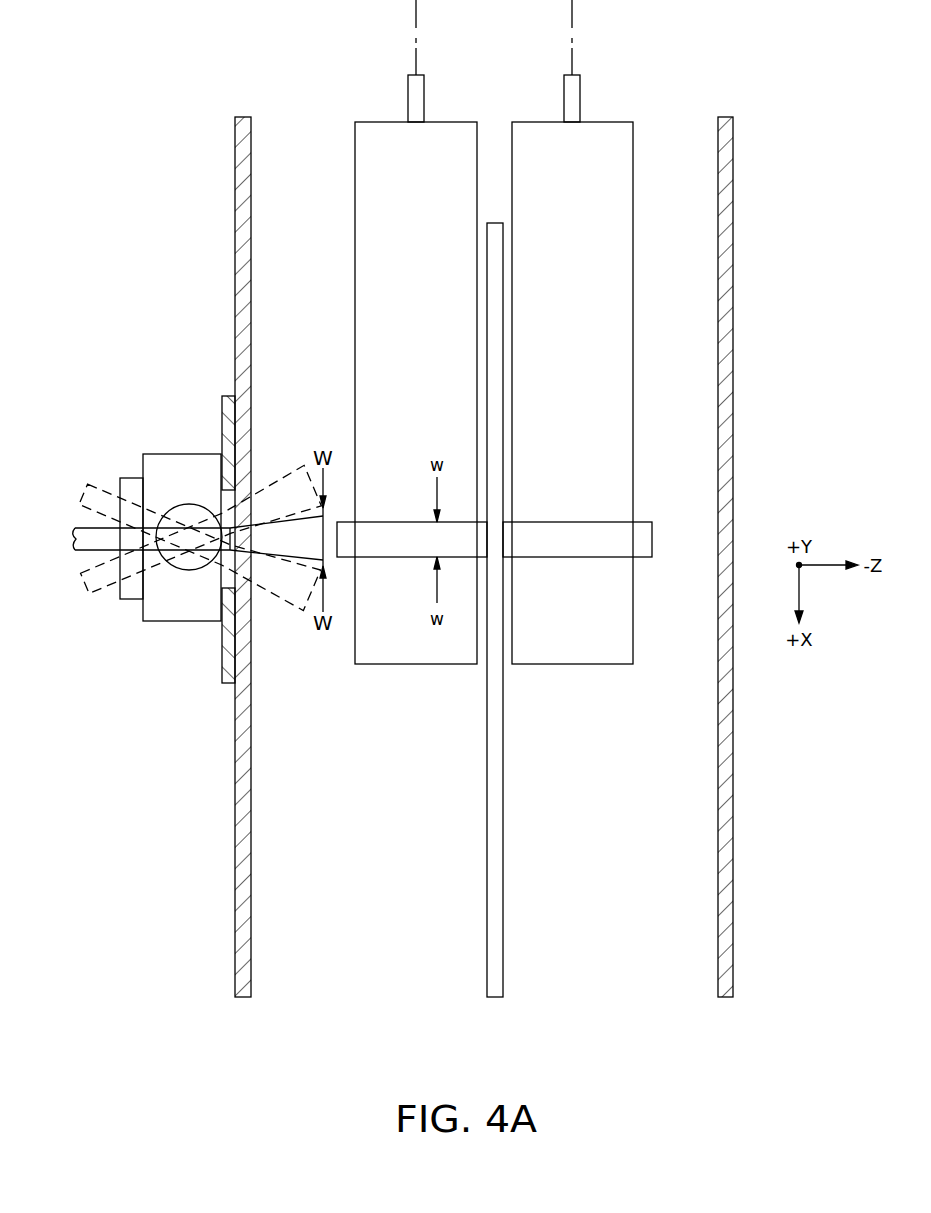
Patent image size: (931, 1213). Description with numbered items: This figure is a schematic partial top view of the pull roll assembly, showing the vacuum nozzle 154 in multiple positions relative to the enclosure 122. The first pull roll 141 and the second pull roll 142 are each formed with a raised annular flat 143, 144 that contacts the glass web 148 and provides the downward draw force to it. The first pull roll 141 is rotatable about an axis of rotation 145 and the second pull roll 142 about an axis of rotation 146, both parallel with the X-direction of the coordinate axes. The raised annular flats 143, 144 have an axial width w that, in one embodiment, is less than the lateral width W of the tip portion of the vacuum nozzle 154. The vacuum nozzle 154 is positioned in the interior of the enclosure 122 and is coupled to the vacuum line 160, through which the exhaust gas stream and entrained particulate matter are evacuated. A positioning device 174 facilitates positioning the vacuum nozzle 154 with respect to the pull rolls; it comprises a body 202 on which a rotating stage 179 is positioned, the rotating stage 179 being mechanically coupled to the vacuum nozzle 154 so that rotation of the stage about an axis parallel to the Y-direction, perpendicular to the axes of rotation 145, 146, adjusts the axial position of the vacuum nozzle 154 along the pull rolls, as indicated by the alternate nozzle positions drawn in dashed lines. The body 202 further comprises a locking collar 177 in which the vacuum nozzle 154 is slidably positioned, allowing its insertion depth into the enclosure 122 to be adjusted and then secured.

The enclosure 122 is at (235, 153).
The first pull roll 141 is at (355, 150).
The second pull roll 142 is at (633, 150).
The raised annular flat 143 is at (377, 522).
The raised annular flat 144 is at (568, 522).
The axis of rotation 145 is at (416, 22).
The axis of rotation 146 is at (572, 22).
The glass web 148 is at (488, 862).
The vacuum nozzle 154 is at (282, 515).
The vacuum line 160 is at (77, 552).
The positioning device 174 is at (148, 496).
The locking collar 177 is at (121, 478).
The rotating stage 179 is at (190, 575).
The body 202 is at (143, 620).